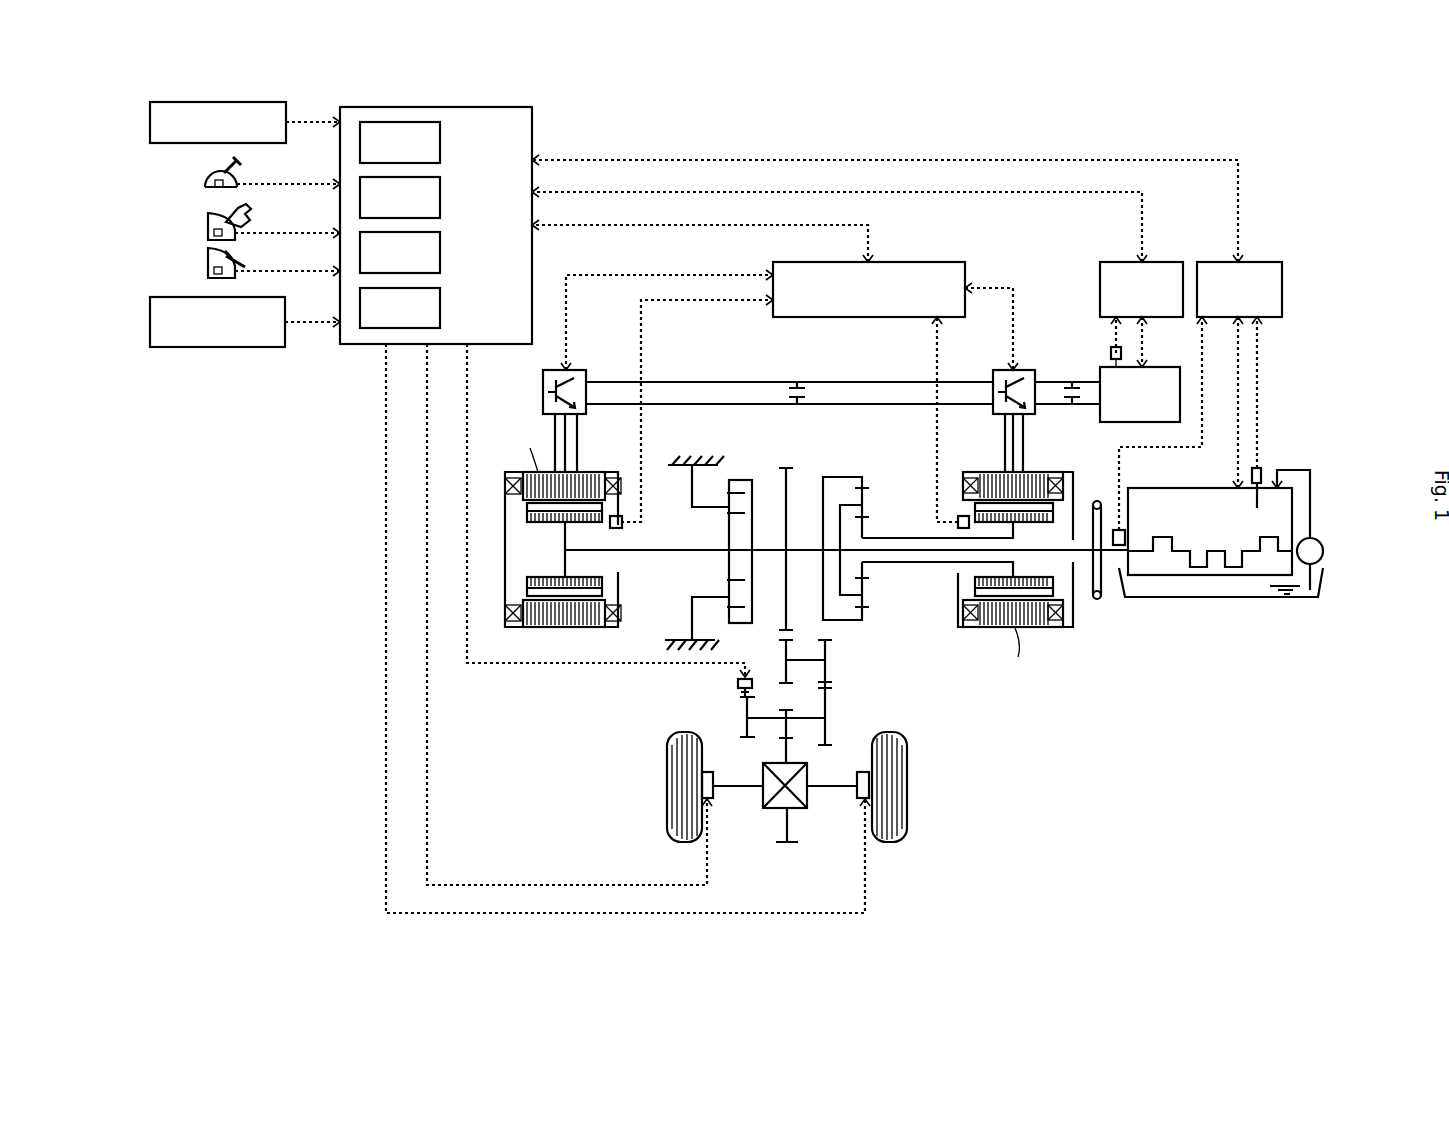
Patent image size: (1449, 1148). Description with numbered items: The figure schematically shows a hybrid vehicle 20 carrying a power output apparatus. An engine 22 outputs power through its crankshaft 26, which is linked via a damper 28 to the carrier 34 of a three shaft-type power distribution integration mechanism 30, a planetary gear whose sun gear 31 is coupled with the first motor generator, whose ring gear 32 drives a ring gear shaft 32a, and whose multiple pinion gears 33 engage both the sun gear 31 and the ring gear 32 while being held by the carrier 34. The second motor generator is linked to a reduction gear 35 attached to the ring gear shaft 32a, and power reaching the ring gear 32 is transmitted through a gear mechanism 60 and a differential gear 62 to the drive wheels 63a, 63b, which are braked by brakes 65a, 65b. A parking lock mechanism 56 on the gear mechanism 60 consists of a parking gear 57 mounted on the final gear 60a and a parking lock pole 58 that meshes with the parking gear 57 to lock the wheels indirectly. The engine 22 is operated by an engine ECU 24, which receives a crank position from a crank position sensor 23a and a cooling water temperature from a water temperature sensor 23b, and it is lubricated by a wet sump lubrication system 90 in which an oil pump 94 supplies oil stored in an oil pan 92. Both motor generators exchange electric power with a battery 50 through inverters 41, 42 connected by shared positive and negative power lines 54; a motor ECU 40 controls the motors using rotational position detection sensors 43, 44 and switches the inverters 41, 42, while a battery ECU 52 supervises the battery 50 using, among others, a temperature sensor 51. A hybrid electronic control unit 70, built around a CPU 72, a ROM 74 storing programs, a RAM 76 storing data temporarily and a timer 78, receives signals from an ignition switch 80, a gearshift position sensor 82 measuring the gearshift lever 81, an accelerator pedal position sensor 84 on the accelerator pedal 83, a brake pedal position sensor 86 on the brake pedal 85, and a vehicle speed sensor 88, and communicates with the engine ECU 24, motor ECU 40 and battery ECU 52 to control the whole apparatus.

The hybrid vehicle 20 is at (1040, 132).
The engine 22 is at (1200, 488).
The crank position sensor 23a is at (1113, 530).
The water temperature sensor 23b is at (1262, 470).
The engine ECU 24 is at (1258, 262).
The crankshaft 26 is at (1110, 553).
The damper 28 is at (1096, 600).
The power distribution integration mechanism 30 is at (866, 465).
The sun gear 31 is at (865, 565).
The ring gear 32 is at (865, 617).
The ring gear shaft 32a is at (770, 550).
The pinion gears 33 is at (865, 590).
The carrier 34 is at (834, 513).
The reduction gear 35 is at (735, 458).
The motor ECU 40 is at (910, 262).
The inverter 41 is at (1030, 370).
The inverter 42 is at (582, 370).
The rotational position detection sensor 43 is at (960, 516).
The rotational position detection sensor 44 is at (616, 516).
The battery 50 is at (1140, 423).
The temperature sensor 51 is at (1111, 351).
The battery ECU 52 is at (1115, 262).
The power lines 54 is at (850, 404).
The parking lock mechanism 56 is at (673, 700).
The parking gear 57 is at (740, 712).
The parking lock pole 58 is at (736, 684).
The gear mechanism 60 is at (890, 690).
The final gear 60a is at (800, 712).
The differential gear 62 is at (800, 806).
The drive wheel 63a is at (667, 822).
The drive wheel 63b is at (907, 822).
The brake 65a is at (713, 790).
The brake 65b is at (855, 790).
The hybrid electronic control unit 70 is at (435, 107).
The CPU 72 is at (440, 141).
The ROM 74 is at (440, 196).
The RAM 76 is at (440, 251).
The timer 78 is at (440, 307).
The ignition switch 80 is at (150, 118).
The gearshift lever 81 is at (226, 170).
The gearshift position sensor 82 is at (205, 186).
The accelerator pedal 83 is at (228, 218).
The accelerator pedal position sensor 84 is at (210, 236).
The brake pedal 85 is at (226, 252).
The brake pedal position sensor 86 is at (210, 270).
The vehicle speed sensor 88 is at (150, 322).
The lubrication system 90 is at (1314, 621).
The oil pan 92 is at (1245, 600).
The oil pump 94 is at (1325, 547).